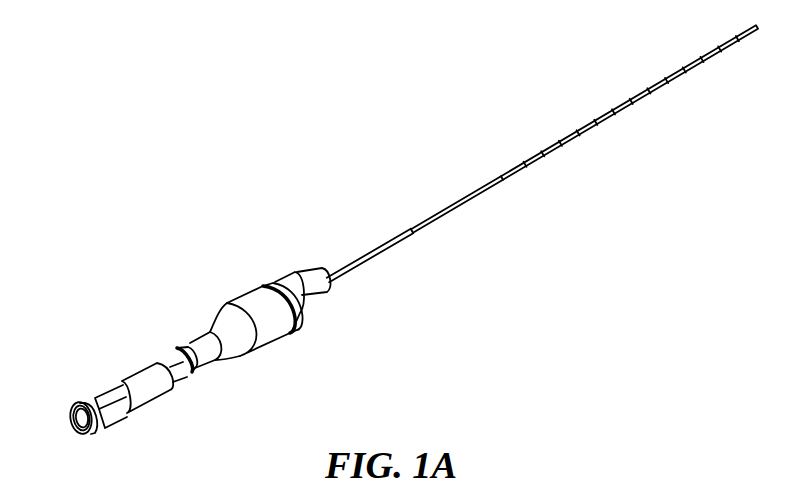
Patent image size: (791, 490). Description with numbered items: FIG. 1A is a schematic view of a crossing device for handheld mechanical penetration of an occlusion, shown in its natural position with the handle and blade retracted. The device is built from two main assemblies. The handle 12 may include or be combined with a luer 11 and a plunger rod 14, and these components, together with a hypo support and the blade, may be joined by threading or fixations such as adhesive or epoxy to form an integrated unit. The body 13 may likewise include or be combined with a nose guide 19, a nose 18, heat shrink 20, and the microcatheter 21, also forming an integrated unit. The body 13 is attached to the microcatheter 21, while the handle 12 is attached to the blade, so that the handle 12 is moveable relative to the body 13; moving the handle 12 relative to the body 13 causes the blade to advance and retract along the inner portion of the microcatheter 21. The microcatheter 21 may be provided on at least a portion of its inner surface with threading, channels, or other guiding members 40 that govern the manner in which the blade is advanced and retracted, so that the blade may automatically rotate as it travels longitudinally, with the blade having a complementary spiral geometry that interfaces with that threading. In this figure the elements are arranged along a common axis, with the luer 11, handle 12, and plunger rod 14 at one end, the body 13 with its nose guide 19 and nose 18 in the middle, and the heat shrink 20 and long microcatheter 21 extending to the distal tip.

The luer 11 is at (81, 391).
The handle 12 is at (131, 366).
The body 13 is at (204, 315).
The plunger rod 14 is at (164, 355).
The nose 18 is at (315, 260).
The nose guide 19 is at (269, 273).
The heat shrink 20 is at (382, 232).
The microcatheter 21 is at (491, 170).
The guiding members 40 is at (541, 147).